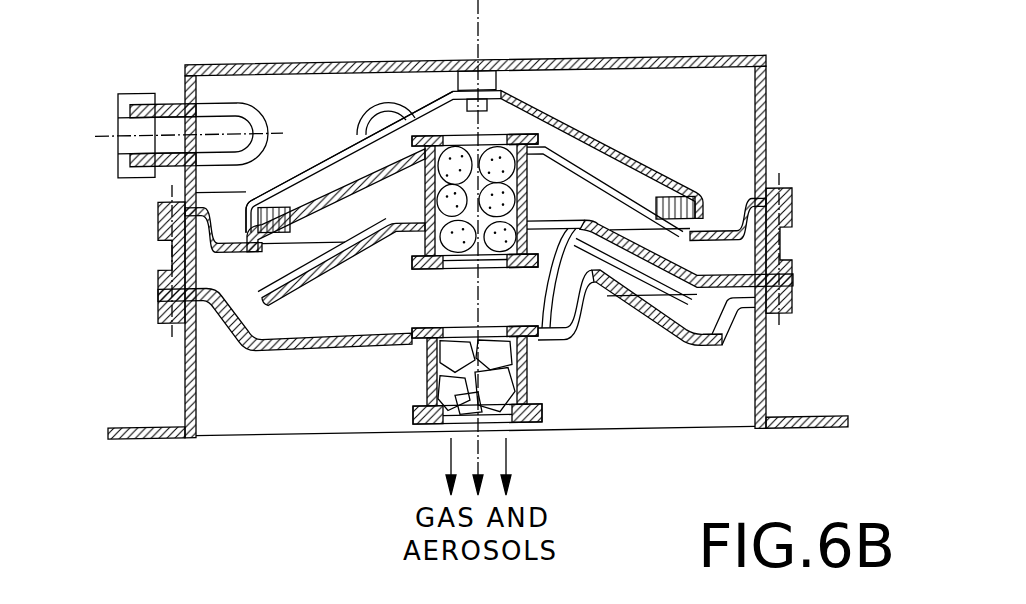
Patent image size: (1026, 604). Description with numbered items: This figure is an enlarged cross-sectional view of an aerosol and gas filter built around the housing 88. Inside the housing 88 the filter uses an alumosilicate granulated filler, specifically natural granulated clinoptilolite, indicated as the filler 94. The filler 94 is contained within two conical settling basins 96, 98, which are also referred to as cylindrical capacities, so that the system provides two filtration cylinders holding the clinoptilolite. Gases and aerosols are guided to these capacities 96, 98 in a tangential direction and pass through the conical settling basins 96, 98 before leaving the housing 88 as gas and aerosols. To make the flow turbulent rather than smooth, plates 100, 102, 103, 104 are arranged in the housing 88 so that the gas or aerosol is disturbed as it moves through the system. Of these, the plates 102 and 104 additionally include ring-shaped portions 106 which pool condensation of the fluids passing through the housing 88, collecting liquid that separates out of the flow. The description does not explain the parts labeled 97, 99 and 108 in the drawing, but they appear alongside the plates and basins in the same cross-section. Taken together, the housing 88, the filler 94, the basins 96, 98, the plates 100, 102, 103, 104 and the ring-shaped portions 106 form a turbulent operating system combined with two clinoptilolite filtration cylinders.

The housing 88 is at (347, 66).
The filler 94 is at (503, 377).
The conical settling basin 96 is at (438, 138).
The conical baffle 97 is at (670, 170).
The conical settling basin 98 is at (542, 412).
The lower conical deflector 99 is at (696, 265).
The plate 100 is at (602, 146).
The plate 102 is at (328, 190).
The plate 103 is at (294, 290).
The plate 104 is at (314, 300).
The ring-shaped portion 106 is at (215, 249).
The lower annular plate 108 is at (262, 350).